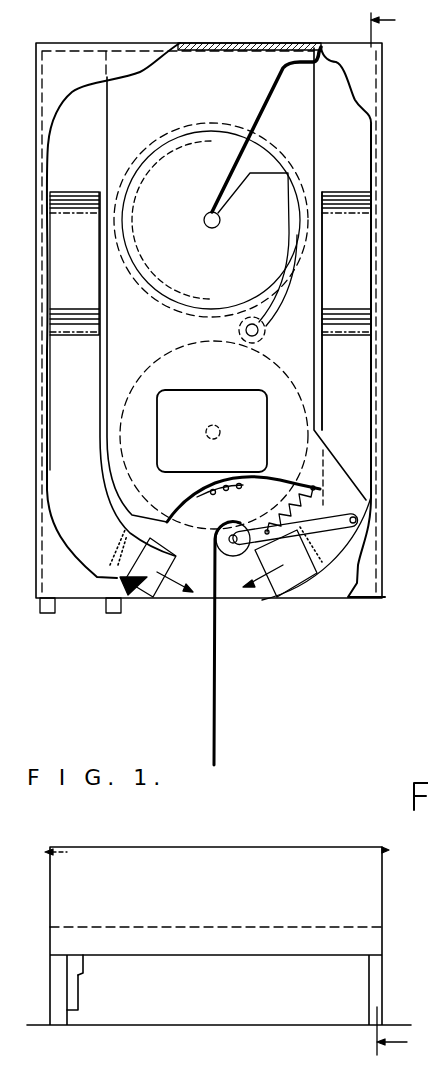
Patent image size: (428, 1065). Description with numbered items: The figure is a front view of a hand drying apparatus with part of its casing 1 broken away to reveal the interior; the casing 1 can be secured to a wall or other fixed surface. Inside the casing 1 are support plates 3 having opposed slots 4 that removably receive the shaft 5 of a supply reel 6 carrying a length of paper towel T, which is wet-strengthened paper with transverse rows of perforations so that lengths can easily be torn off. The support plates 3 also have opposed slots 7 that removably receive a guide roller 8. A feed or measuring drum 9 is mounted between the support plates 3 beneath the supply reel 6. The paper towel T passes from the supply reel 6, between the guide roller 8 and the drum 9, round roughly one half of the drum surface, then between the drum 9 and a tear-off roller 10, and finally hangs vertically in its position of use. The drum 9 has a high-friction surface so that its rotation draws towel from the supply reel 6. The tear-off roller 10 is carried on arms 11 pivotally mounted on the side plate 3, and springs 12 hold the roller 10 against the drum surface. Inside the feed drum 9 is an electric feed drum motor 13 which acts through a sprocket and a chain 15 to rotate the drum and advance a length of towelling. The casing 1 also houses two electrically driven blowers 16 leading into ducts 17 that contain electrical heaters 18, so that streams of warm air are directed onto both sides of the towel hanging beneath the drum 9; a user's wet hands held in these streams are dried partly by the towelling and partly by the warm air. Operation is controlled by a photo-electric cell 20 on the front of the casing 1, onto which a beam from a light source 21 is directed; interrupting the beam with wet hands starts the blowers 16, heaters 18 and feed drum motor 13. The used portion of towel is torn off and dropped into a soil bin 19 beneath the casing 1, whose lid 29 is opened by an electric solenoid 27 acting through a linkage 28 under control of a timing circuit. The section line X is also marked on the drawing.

The casing 1 is at (77, 72).
The support plates 3 is at (250, 85).
The slots 4 is at (290, 172).
The shaft 5 is at (204, 220).
The supply reel 6 is at (268, 140).
The slots 7 is at (258, 310).
The guide roller 8 is at (263, 337).
The feed or measuring drum 9 is at (125, 395).
The tear-off roller 10 is at (235, 556).
The arms 11 is at (291, 535).
The springs 12 is at (330, 505).
The electric feed drum motor 13 is at (173, 437).
The chain 15 is at (215, 495).
The electrically driven blowers 16 is at (72, 210).
The ducts 17 is at (348, 441).
The electrical heaters 18 is at (110, 548).
The soil bin 19 is at (105, 883).
The photo-electric cell 20 is at (44, 615).
The light source 21 is at (114, 615).
The electric solenoid 27 is at (72, 993).
The linkage 28 is at (86, 964).
The lid 29 is at (324, 928).
The paper towel T is at (213, 717).
The section line X is at (399, 532).